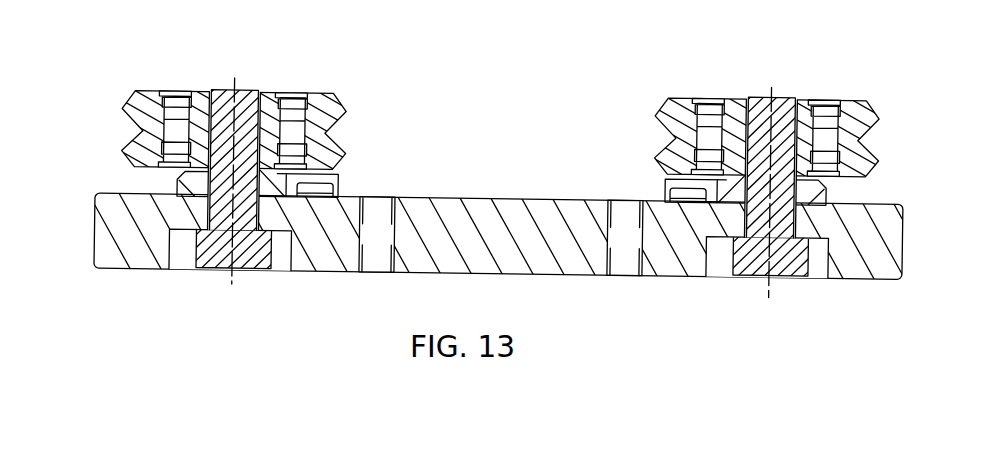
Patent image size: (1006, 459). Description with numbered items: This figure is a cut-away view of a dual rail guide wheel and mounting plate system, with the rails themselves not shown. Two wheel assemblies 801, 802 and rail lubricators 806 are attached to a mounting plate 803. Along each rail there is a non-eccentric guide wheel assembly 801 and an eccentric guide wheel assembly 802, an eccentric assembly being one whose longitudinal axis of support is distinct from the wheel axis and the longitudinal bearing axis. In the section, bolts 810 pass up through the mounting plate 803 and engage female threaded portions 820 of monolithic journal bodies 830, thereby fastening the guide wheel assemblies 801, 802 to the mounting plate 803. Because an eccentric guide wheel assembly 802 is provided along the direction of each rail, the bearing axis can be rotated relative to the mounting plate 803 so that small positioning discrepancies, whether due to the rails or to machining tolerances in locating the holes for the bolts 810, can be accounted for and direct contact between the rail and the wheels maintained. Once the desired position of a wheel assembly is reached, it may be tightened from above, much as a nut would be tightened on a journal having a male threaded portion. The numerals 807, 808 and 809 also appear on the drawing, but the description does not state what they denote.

The non-eccentric guide wheel assembly 801 is at (150, 90).
The eccentric guide wheel assembly 802 is at (853, 102).
The mounting plate 803 is at (903, 240).
The rail lubricator 806 is at (340, 180).
The bolt 807 is at (763, 103).
The threaded shank 808 is at (508, 165).
The bolt axis 809 is at (770, 285).
The bolt 810 is at (257, 264).
The female threaded portion 820 is at (220, 90).
The monolithic journal body 830 is at (267, 90).